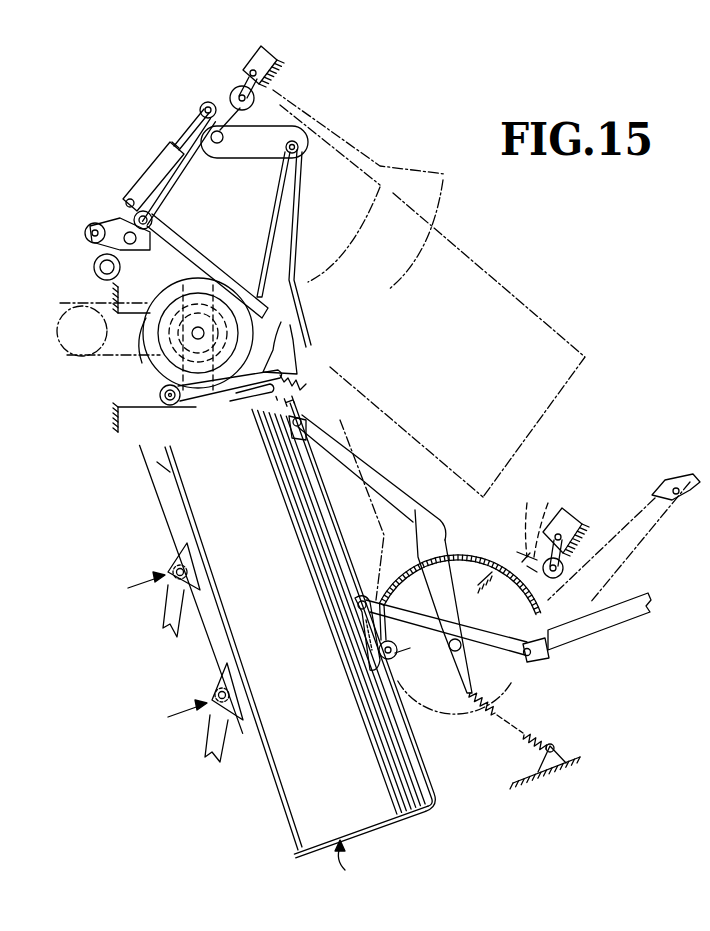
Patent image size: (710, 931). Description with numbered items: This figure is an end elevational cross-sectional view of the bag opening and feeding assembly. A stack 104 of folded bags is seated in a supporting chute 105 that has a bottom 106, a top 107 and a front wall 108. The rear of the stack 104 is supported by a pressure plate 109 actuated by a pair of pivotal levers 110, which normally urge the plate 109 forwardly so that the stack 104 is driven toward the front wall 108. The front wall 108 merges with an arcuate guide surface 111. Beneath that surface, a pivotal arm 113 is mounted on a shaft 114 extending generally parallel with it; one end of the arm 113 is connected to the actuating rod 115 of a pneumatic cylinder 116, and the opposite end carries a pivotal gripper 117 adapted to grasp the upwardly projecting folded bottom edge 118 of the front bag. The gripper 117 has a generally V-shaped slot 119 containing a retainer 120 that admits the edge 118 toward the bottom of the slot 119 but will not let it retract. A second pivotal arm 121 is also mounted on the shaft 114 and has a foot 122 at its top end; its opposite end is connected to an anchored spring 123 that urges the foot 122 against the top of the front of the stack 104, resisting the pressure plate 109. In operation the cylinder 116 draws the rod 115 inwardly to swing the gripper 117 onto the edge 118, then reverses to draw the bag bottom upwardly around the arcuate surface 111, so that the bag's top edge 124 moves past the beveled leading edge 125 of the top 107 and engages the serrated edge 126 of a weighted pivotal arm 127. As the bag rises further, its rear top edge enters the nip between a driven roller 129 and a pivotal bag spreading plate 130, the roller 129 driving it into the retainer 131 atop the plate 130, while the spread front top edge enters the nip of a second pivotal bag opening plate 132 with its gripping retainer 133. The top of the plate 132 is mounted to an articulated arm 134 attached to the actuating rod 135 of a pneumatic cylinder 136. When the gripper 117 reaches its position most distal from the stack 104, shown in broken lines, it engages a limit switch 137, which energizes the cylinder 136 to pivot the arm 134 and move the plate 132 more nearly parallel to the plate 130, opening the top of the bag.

The stack 104 is at (388, 818).
The supporting chute 105 is at (358, 862).
The bottom 106 is at (387, 826).
The top 107 is at (196, 438).
The front wall 108 is at (423, 788).
The pressure plate 109 is at (226, 648).
The pivotal levers 110 is at (172, 622).
The arcuate guide surface 111 is at (478, 558).
The pivotal arm 113 is at (516, 656).
The shaft 114 is at (462, 650).
The actuating rod 115 is at (553, 647).
The pneumatic cylinder 116 is at (622, 625).
The pivotal gripper 117 is at (356, 632).
The folded bottom edge 118 is at (372, 649).
The V-shaped slot 119 is at (530, 523).
The retainer 120 is at (566, 520).
The second pivotal arm 121 is at (443, 497).
The foot 122 is at (307, 413).
The anchored spring 123 is at (518, 730).
The top edge 124 is at (276, 415).
The beveled leading edge 125 is at (236, 410).
The serrated edge 126 is at (298, 387).
The weighted pivotal arm 127 is at (280, 335).
The driven roller 129 is at (146, 343).
The pivotal bag spreading plate 130 is at (218, 290).
The retainer 131 is at (170, 252).
The second pivotal bag opening plate 132 is at (277, 198).
The gripping retainer 133 is at (293, 205).
The articulated arm 134 is at (263, 140).
The actuating rod 135 is at (189, 128).
The pneumatic cylinder 136 is at (158, 164).
The limit switch 137 is at (577, 555).